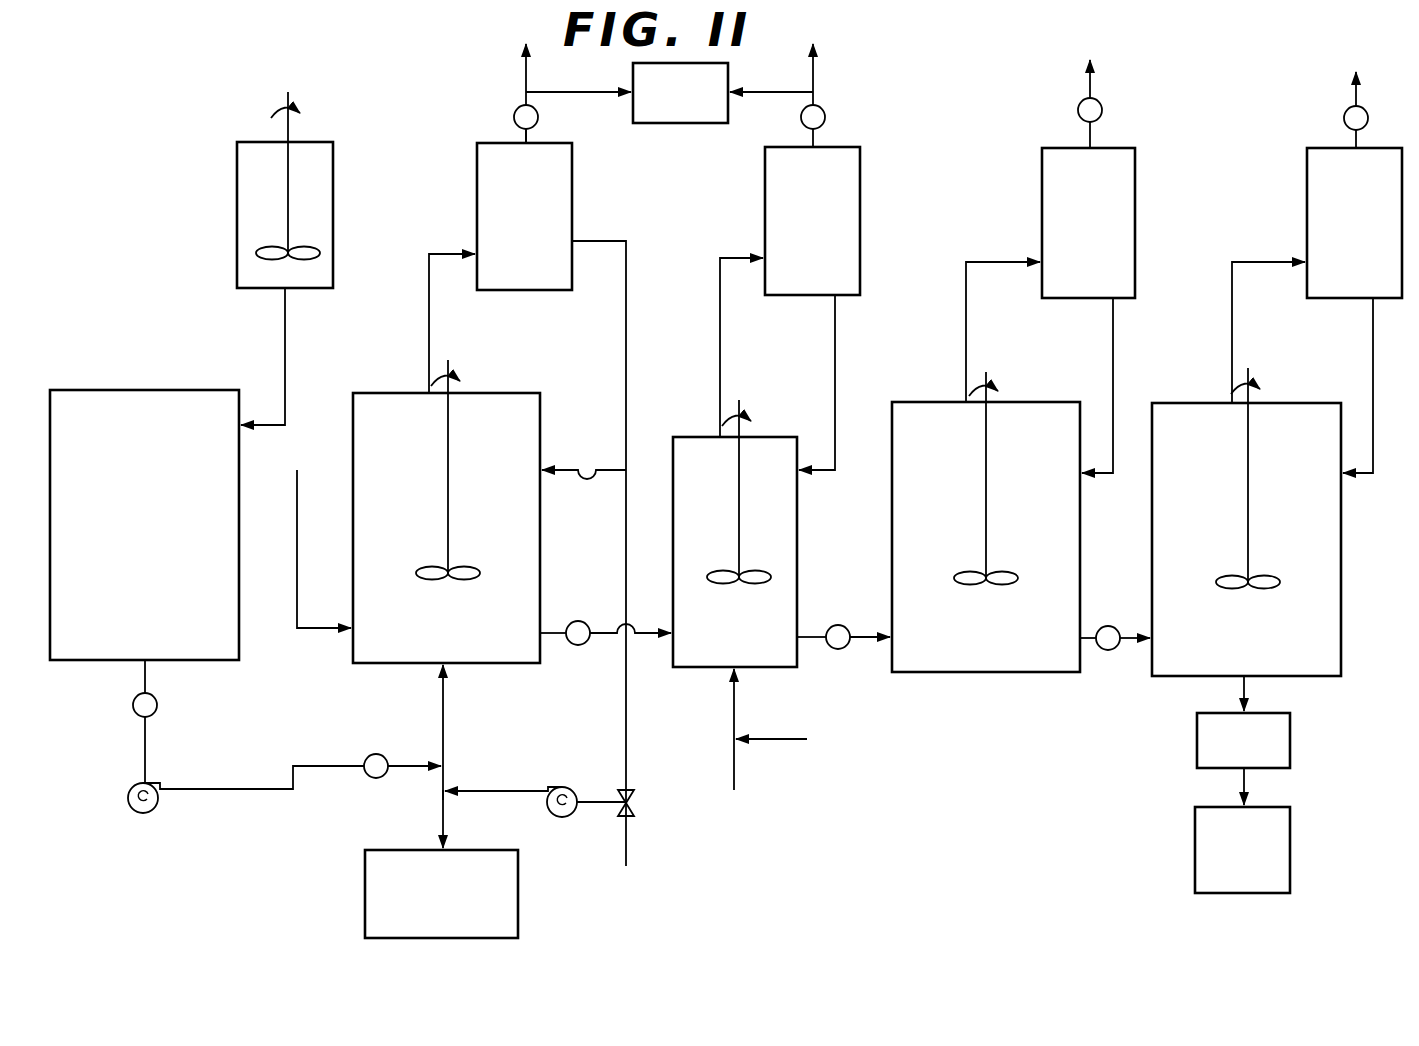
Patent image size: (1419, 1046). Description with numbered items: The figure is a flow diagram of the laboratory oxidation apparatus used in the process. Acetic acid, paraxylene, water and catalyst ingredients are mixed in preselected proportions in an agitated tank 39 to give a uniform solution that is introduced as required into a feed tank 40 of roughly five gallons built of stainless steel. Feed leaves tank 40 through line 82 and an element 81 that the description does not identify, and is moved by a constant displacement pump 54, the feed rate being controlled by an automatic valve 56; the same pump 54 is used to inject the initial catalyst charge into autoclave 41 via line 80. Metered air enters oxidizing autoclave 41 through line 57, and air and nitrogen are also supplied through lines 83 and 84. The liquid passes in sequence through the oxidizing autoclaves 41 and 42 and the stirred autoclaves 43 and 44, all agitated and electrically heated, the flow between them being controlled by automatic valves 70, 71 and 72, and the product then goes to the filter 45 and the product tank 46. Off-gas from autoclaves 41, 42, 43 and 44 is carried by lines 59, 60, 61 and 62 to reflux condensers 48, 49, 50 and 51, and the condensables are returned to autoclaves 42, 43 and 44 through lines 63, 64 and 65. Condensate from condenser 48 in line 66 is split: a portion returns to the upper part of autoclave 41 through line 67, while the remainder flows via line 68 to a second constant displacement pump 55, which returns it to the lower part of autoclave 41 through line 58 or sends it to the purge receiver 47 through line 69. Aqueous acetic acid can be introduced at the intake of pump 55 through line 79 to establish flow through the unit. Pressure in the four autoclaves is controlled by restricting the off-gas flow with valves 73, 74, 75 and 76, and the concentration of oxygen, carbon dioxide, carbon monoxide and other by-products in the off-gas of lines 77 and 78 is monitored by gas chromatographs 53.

The agitated tank 39 is at (297, 204).
The feed tank 40 is at (129, 609).
The oxidizing autoclave 41 is at (428, 614).
The oxidizing autoclave 42 is at (720, 618).
The stirred autoclave 43 is at (970, 619).
The stirred autoclave 44 is at (1233, 623).
The filter 45 is at (1230, 753).
The product tank 46 is at (1227, 861).
The purge receiver 47 is at (427, 901).
The reflux condenser 48 is at (505, 223).
The reflux condenser 49 is at (795, 233).
The reflux condenser 50 is at (1075, 236).
The reflux condenser 51 is at (1340, 239).
The gas chromatographs 53 is at (667, 103).
The constant displacement pump 54 is at (150, 812).
The constant displacement pump 55 is at (563, 818).
The automatic valve 56 is at (377, 754).
The air line 57 is at (298, 558).
The return line 58 is at (444, 700).
The off-gas line 59 is at (429, 320).
The off-gas line 60 is at (721, 350).
The off-gas line 61 is at (966, 336).
The off-gas line 62 is at (1232, 323).
The condensate return line 63 is at (836, 352).
The condensate return line 64 is at (1114, 354).
The condensate return line 65 is at (1374, 358).
The condensate line 66 is at (622, 242).
The return line 67 is at (600, 474).
The condensate line 68 is at (627, 558).
The purge line 69 is at (444, 815).
The automatic valve 70 is at (579, 622).
The automatic valve 71 is at (838, 625).
The automatic valve 72 is at (1108, 627).
The off-gas valve 73 is at (514, 112).
The off-gas valve 74 is at (824, 110).
The off-gas valve 75 is at (1102, 112).
The off-gas valve 76 is at (1368, 118).
The off-gas line 77 is at (536, 126).
The off-gas line 78 is at (820, 133).
The acetic acid line 79 is at (627, 845).
The catalyst injection line 80 is at (144, 749).
The valve 81 is at (158, 707).
The feed mix line 82 is at (146, 678).
The air line 83 is at (735, 770).
The nitrogen line 84 is at (765, 738).